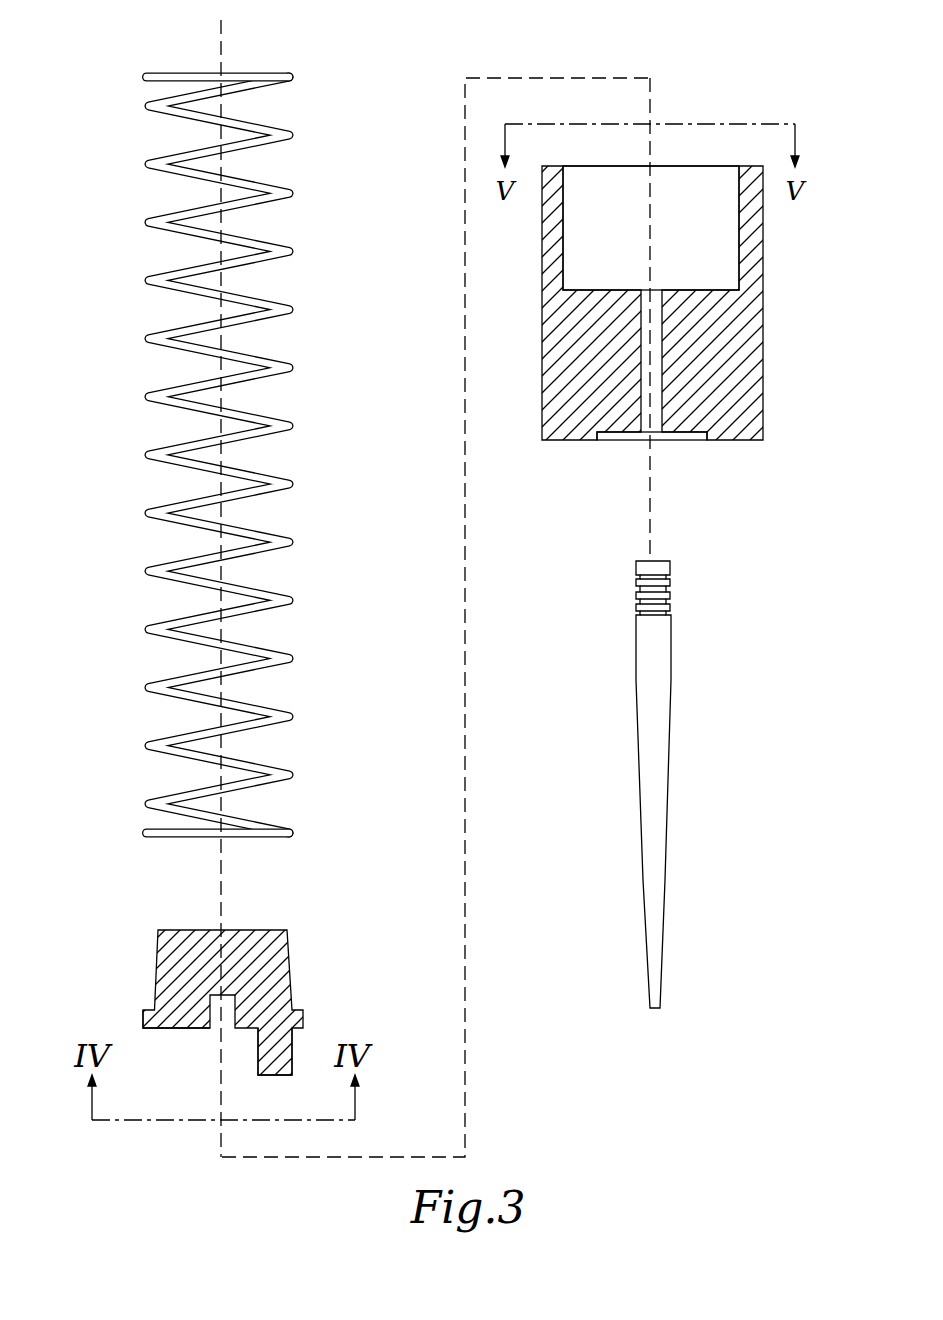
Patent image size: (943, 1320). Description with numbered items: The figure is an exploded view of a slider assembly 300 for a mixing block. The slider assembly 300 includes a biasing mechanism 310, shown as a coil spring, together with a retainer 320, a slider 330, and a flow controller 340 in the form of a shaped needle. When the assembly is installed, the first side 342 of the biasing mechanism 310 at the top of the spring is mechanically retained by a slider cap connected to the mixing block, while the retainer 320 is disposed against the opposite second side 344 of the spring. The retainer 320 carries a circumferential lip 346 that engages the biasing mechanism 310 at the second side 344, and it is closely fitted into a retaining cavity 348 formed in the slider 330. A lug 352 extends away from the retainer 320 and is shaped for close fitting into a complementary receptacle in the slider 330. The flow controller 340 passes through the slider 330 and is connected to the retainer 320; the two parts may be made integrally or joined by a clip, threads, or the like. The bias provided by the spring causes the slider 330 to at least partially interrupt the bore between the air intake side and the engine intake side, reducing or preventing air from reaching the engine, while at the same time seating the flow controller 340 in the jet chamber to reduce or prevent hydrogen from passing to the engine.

The slider assembly 300 is at (590, 63).
The biasing mechanism 310 is at (209, 460).
The retainer 320 is at (203, 1002).
The slider 330 is at (693, 303).
The flow controller 340 is at (662, 662).
The first side 342 is at (273, 67).
The second side 344 is at (275, 847).
The circumferential lip 346 is at (145, 1017).
The retaining cavity 348 is at (636, 236).
The lug 352 is at (292, 1053).